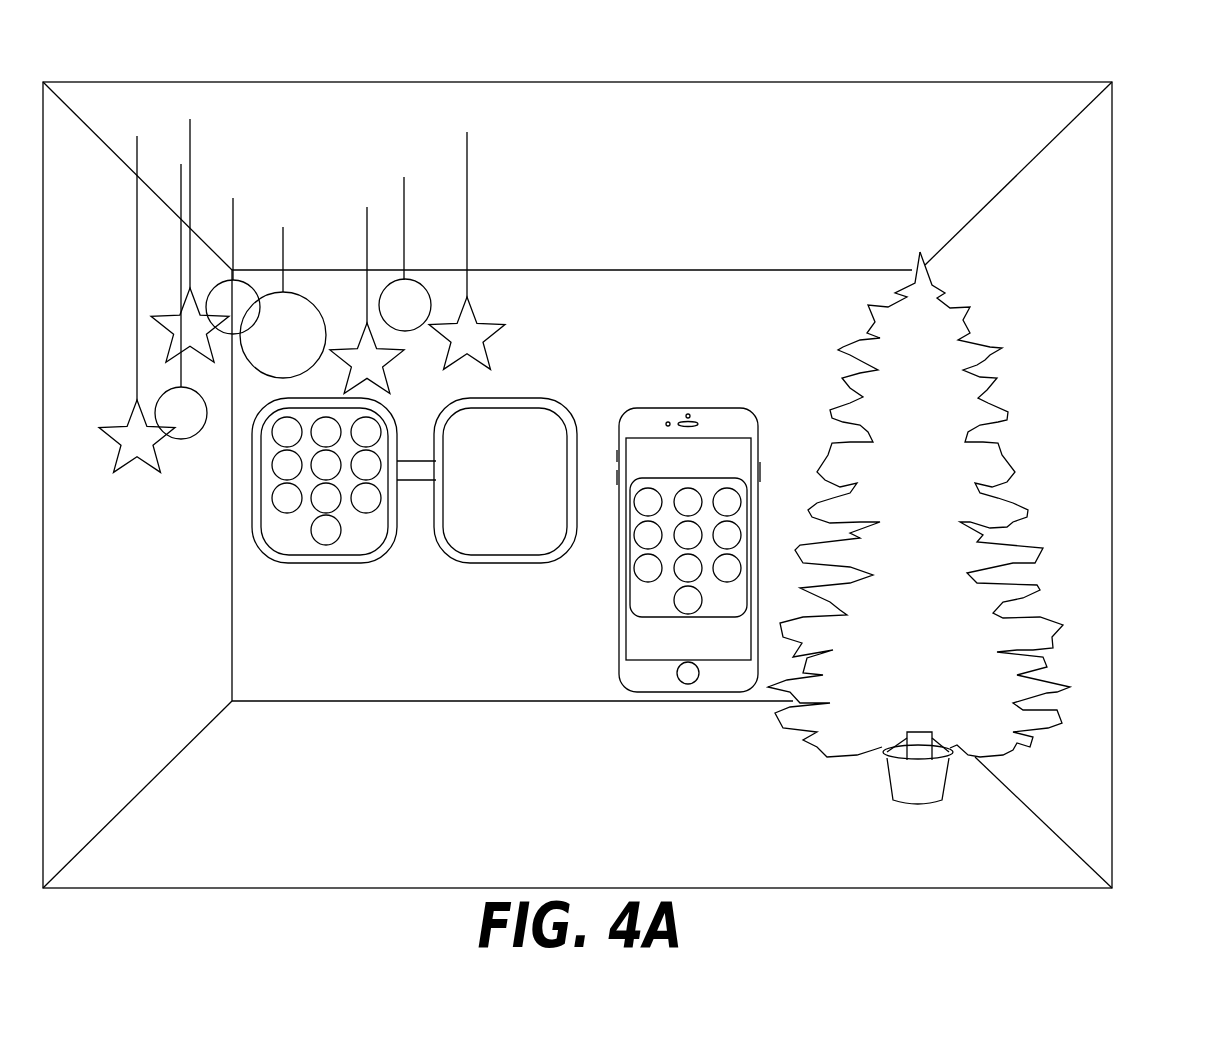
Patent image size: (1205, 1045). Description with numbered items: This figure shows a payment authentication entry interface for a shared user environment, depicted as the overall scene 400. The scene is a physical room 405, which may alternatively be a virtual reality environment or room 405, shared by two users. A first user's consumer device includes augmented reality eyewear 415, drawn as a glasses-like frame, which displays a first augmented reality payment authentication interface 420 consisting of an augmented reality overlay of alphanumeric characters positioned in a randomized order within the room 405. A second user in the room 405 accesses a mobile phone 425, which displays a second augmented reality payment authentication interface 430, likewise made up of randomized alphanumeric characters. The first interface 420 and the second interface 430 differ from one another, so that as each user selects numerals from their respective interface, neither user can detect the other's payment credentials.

The environment 400 is at (611, 53).
The physical room 405 is at (1100, 307).
The augmented reality eyewear 415 is at (281, 558).
The first augmented reality payment authentication interface 420 is at (360, 535).
The mobile phone 425 is at (619, 588).
The second augmented reality payment authentication interface 430 is at (648, 597).